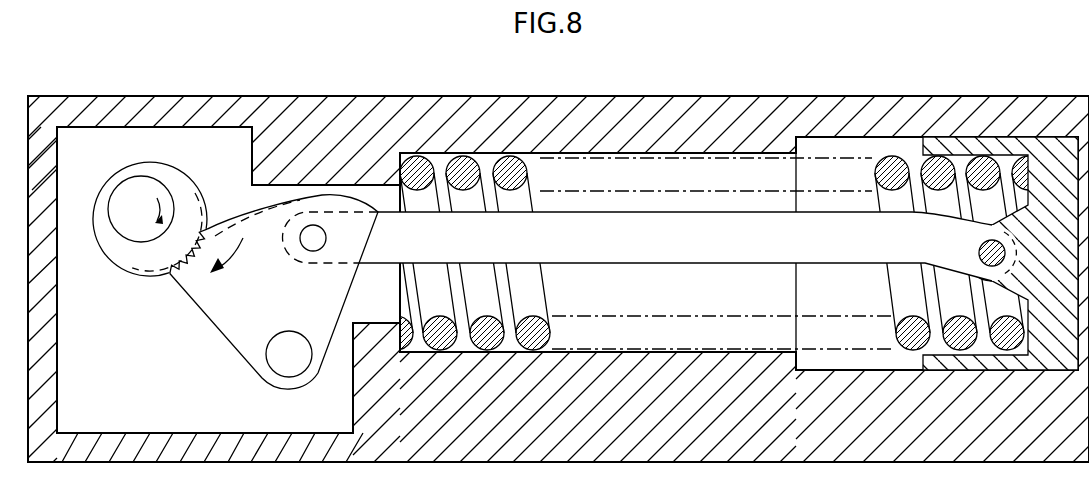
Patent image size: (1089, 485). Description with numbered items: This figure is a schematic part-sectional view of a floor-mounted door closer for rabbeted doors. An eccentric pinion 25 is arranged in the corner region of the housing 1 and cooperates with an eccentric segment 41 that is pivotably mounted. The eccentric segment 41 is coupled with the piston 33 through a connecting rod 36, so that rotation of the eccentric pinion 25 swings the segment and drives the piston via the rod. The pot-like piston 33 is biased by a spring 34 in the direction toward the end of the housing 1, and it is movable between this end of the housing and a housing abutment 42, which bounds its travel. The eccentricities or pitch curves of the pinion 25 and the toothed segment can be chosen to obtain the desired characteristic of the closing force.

The housing 1 is at (276, 112).
The eccentric pinion 25 is at (183, 182).
The piston 33 is at (1041, 150).
The spring 34 is at (524, 153).
The connecting rod 36 is at (618, 248).
The eccentric segment 41 is at (207, 292).
The housing abutment 42 is at (797, 142).